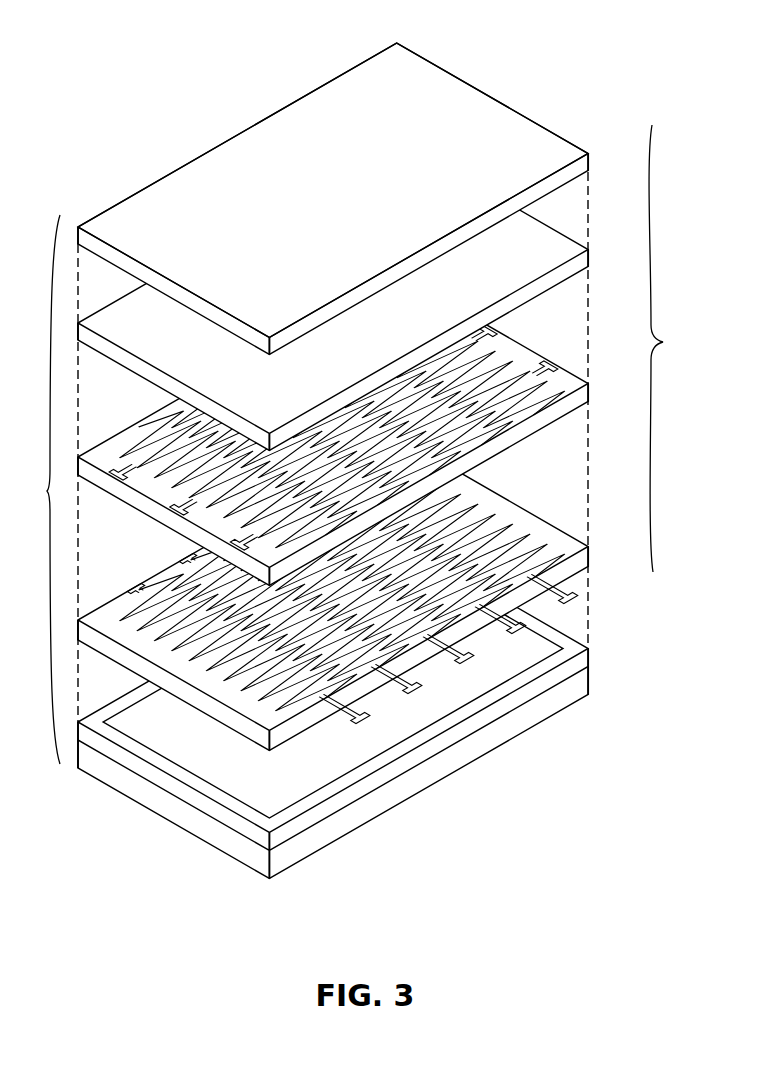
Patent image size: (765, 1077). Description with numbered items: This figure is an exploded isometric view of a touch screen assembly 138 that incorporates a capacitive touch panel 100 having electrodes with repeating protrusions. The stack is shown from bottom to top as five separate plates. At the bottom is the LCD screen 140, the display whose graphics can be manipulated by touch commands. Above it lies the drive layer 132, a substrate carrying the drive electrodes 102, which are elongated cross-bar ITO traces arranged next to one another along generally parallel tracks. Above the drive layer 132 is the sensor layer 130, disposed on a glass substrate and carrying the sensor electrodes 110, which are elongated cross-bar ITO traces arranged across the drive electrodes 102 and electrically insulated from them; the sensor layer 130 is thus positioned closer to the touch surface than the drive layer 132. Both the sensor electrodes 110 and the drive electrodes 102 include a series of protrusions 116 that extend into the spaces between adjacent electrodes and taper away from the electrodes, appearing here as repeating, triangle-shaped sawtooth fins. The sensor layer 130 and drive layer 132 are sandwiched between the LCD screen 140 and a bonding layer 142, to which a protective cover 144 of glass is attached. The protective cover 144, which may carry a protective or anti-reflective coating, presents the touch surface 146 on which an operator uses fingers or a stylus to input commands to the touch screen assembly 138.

The capacitive touch panel 100 is at (674, 348).
The drive electrodes 102 is at (560, 555).
The sensor electrodes 110 is at (513, 380).
The protrusions 116 is at (470, 430).
The sensor layer 130 is at (355, 429).
The drive layer 132 is at (359, 667).
The touch screen assembly 138 is at (35, 489).
The LCD screen 140 is at (455, 770).
The bonding layer 142 is at (572, 246).
The protective cover 144 is at (350, 185).
The touch surface 146 is at (405, 70).